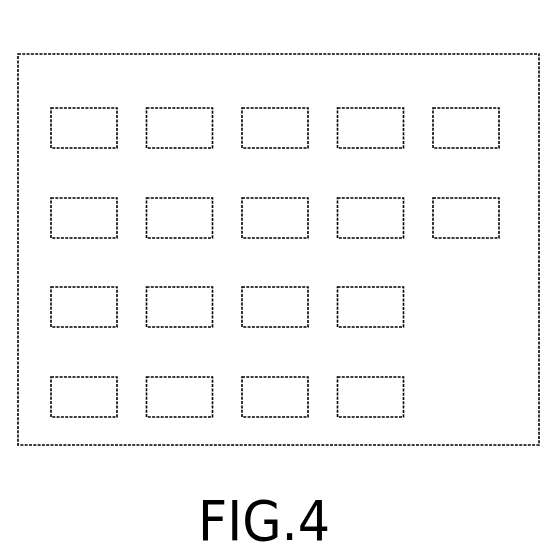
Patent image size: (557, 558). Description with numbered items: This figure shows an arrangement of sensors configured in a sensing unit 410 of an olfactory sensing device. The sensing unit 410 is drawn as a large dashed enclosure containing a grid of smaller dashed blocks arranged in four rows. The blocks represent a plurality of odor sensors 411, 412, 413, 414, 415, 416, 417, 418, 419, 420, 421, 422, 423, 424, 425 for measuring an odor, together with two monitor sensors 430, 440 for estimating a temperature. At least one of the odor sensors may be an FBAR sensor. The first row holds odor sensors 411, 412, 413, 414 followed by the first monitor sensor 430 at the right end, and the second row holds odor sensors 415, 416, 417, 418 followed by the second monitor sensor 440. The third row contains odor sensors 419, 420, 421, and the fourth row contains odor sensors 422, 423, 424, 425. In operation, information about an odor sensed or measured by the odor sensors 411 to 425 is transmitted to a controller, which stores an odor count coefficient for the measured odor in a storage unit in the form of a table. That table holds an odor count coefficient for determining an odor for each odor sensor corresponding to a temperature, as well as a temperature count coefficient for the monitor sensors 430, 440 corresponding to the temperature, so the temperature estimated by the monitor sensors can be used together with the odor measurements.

The sensing unit 410 is at (285, 54).
The odor sensor 411 is at (87, 108).
The odor sensor 412 is at (182, 108).
The odor sensor 413 is at (278, 108).
The odor sensor 414 is at (374, 108).
The odor sensor 415 is at (87, 198).
The odor sensor 416 is at (182, 198).
The odor sensor 417 is at (278, 198).
The odor sensor 418 is at (374, 198).
The odor sensor 419 is at (87, 287).
The odor sensor 420 is at (182, 287).
The odor sensor 421 is at (278, 287).
The odor sensor 422 is at (87, 377).
The odor sensor 423 is at (182, 377).
The odor sensor 424 is at (278, 377).
The odor sensor 425 is at (374, 377).
The monitor sensor 430 is at (469, 108).
The monitor sensor 440 is at (469, 198).